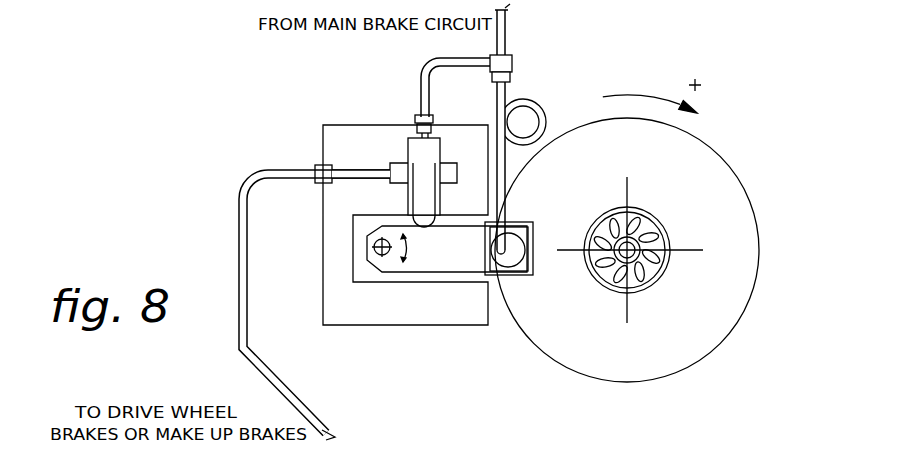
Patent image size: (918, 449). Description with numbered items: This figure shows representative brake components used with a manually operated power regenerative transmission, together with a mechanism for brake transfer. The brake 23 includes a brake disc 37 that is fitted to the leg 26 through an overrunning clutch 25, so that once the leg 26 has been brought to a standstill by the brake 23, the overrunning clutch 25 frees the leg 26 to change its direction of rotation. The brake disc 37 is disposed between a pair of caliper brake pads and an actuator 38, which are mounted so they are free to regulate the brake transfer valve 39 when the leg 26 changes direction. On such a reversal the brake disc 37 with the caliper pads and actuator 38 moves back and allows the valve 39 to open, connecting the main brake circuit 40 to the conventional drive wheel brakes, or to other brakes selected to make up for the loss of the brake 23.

The brake 23 is at (231, 145).
The overrunning clutch 25 is at (647, 233).
The leg 26 is at (650, 275).
The brake disc 37 is at (752, 232).
The actuator 38 is at (473, 258).
The brake transfer valve 39 is at (420, 177).
The main brake circuit 40 is at (505, 40).